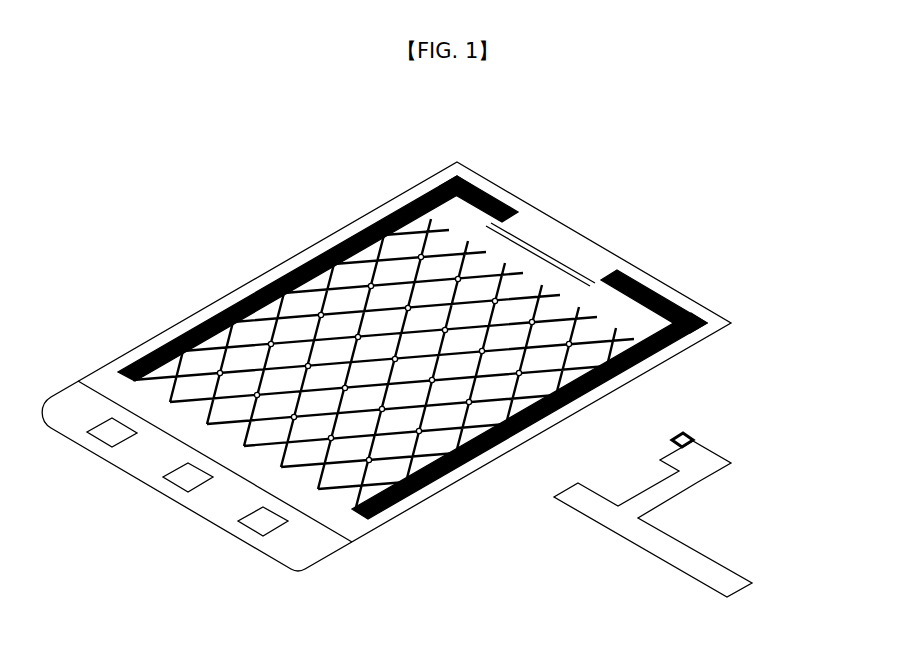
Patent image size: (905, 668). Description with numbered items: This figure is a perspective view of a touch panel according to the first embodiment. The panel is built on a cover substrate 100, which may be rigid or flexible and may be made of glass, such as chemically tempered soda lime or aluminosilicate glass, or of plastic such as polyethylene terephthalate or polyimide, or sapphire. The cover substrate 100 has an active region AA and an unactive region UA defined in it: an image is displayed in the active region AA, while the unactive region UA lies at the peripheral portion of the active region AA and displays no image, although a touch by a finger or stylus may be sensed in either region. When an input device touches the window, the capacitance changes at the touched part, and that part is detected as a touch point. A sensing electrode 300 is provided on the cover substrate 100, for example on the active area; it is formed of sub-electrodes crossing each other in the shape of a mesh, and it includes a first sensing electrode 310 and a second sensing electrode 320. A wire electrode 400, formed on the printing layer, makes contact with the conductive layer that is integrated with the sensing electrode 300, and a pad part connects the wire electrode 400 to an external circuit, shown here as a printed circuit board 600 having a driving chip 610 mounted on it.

The cover substrate 100 is at (126, 351).
The unactive region UA is at (156, 458).
The active region AA is at (522, 408).
The sensing electrode 300 is at (486, 347).
The first sensing electrode 310 is at (672, 286).
The second sensing electrode 320 is at (663, 333).
The wire electrode 400 is at (583, 240).
The printed circuit board 600 is at (660, 495).
The driving chip / connector 610 is at (692, 435).